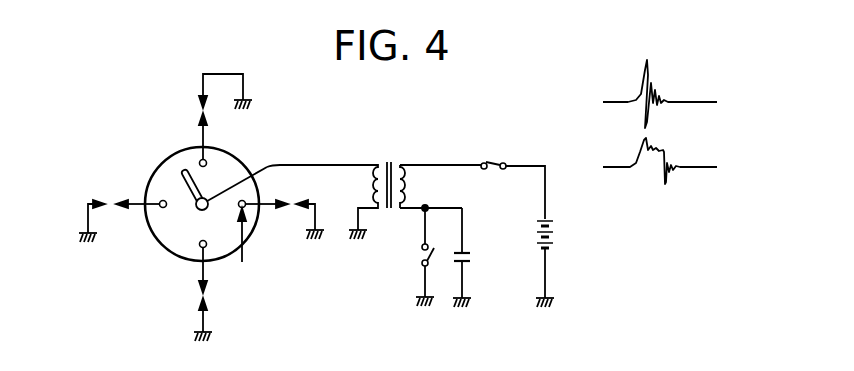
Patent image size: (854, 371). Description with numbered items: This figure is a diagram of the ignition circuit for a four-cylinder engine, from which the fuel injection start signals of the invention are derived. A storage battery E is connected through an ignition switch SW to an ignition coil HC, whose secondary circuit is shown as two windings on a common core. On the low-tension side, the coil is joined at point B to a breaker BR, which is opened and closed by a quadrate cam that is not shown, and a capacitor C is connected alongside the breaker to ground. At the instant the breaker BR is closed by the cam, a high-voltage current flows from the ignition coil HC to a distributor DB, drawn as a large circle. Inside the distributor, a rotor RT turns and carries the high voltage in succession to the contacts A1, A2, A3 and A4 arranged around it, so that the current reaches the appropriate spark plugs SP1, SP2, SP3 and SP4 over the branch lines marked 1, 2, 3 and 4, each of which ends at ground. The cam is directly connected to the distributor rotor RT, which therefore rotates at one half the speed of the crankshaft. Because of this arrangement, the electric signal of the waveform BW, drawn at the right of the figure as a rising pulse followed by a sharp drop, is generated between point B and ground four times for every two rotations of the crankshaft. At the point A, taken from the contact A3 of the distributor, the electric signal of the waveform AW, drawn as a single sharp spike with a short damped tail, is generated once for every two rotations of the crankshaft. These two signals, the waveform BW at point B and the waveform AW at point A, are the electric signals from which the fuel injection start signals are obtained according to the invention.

The distributor DB is at (153, 238).
The rotor RT is at (184, 170).
The contact A1 is at (218, 165).
The contact A2 is at (166, 192).
The contact A3 is at (228, 211).
The contact A4 is at (188, 244).
The point A is at (244, 248).
The spark plug SP1 is at (205, 117).
The spark plug SP2 is at (119, 208).
The spark plug SP3 is at (285, 207).
The spark plug SP4 is at (217, 295).
The spark plug lead 1 is at (213, 141).
The spark plug lead 2 is at (144, 217).
The spark plug lead 3 is at (262, 217).
The spark plug lead 4 is at (194, 268).
The ignition coil HC is at (336, 187).
The point B is at (441, 188).
The breaker BR is at (411, 257).
The capacitor C is at (472, 257).
The ignition switch SW is at (512, 178).
The storage battery E is at (554, 263).
The waveform AW is at (640, 94).
The waveform BW is at (640, 161).